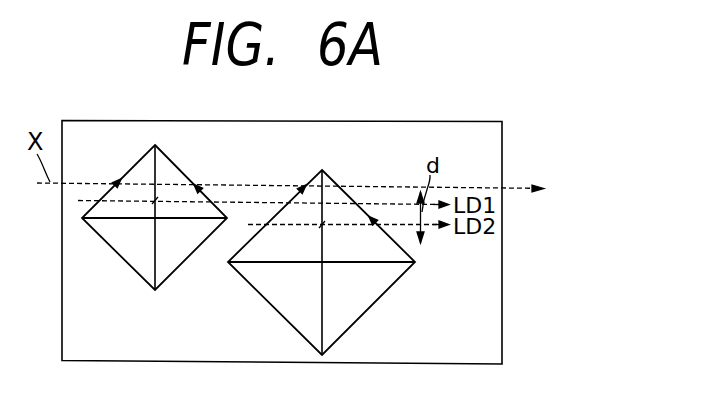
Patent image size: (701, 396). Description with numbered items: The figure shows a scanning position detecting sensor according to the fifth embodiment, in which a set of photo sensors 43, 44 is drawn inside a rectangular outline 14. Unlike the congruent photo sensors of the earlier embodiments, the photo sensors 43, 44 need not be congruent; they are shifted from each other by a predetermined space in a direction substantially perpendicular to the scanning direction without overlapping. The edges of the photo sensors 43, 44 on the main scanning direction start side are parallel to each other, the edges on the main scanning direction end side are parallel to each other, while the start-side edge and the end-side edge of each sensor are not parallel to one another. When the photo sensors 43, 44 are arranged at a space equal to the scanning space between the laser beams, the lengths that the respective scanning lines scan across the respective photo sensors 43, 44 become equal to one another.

The substrate 14 is at (502, 312).
The photo sensor 43 is at (181, 170).
The photo sensor 44 is at (332, 180).